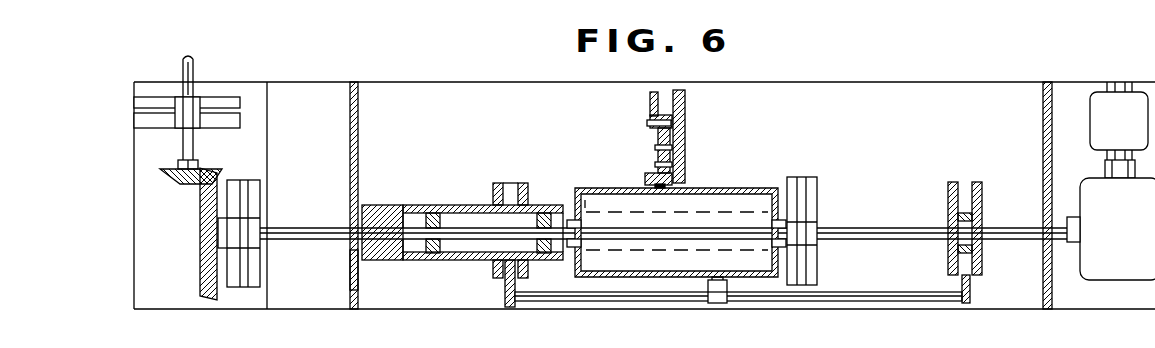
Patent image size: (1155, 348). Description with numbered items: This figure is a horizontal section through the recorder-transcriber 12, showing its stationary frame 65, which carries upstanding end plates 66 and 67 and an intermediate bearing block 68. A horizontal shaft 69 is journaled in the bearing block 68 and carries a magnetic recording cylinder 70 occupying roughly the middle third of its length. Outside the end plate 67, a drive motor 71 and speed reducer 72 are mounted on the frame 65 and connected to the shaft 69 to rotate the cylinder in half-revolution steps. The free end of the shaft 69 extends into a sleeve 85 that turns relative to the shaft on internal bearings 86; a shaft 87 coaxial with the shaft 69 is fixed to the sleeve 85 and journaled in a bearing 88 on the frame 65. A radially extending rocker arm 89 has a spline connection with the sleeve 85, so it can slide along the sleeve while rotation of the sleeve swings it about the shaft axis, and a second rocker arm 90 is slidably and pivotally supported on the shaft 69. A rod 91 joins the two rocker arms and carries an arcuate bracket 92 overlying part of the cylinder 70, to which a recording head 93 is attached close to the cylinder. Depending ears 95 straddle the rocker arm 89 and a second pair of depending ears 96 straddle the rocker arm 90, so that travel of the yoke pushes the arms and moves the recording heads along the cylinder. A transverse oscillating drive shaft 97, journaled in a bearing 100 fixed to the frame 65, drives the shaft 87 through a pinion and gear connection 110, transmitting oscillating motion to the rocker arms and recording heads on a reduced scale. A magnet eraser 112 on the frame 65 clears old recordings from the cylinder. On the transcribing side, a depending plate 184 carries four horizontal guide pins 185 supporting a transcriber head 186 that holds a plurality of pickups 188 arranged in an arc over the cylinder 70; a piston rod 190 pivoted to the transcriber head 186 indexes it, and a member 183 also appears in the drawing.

The recorder-transcriber 12 is at (368, 67).
The stationary frame 65 is at (458, 90).
The end plate 66 is at (350, 277).
The end plate 67 is at (1052, 290).
The bearing block 68 is at (817, 238).
The horizontal shaft 69 is at (893, 226).
The magnetic recording cylinder 70 is at (745, 188).
The drive motor 71 is at (1130, 134).
The speed reducer 72 is at (1130, 232).
The sleeve 85 is at (420, 205).
The internal bearings 86 is at (433, 255).
The shaft 87 is at (298, 227).
The bearing 88 is at (257, 238).
The rocker arm 89 is at (505, 292).
The rocker arm 90 is at (970, 283).
The rod 91 is at (600, 301).
The arcuate bracket 92 is at (716, 303).
The recording head 93 is at (727, 285).
The depending ears 95 is at (520, 183).
The depending ears 96 is at (976, 182).
The transverse oscillating drive shaft 97 is at (196, 66).
The bearing 100 is at (203, 119).
The pinion and gear connection 110 is at (186, 184).
The magnet eraser 112 is at (604, 190).
The member 183 is at (864, 340).
The depending plate 184 is at (688, 126).
The guide pins 185 is at (655, 164).
The transcriber head 186 is at (673, 152).
The pickups 188 is at (688, 178).
The piston rod 190 is at (650, 100).